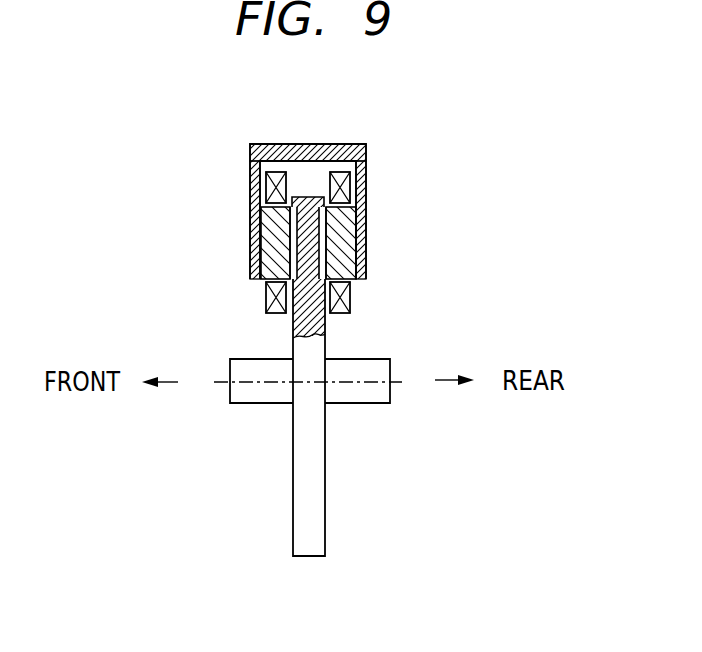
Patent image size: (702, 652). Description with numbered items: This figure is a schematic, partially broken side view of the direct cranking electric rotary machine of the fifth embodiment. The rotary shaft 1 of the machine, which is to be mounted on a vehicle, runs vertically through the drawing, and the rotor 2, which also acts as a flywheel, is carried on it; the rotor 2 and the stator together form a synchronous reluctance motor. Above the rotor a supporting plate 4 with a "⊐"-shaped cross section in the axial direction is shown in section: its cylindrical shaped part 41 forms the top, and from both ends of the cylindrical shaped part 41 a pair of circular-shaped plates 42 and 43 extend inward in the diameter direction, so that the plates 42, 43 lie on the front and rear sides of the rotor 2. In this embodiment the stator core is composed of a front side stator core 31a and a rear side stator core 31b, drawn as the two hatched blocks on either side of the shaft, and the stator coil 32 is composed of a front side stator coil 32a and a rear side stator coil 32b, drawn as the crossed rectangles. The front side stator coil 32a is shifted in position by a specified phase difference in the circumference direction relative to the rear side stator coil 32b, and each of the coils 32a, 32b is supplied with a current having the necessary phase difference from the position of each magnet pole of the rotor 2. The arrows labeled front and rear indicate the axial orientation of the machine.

The rotary shaft 1 is at (254, 393).
The rotor 2 is at (308, 347).
The supporting plate 4 is at (313, 180).
The cylindrical shaped part 41 is at (318, 144).
The circular-shaped plate 42 is at (250, 160).
The circular-shaped plate 43 is at (367, 150).
The front side stator core 31a is at (270, 240).
The rear side stator core 31b is at (347, 242).
The stator coil 32 is at (270, 188).
The front side stator coil 32a is at (270, 298).
The rear side stator coil 32b is at (346, 298).